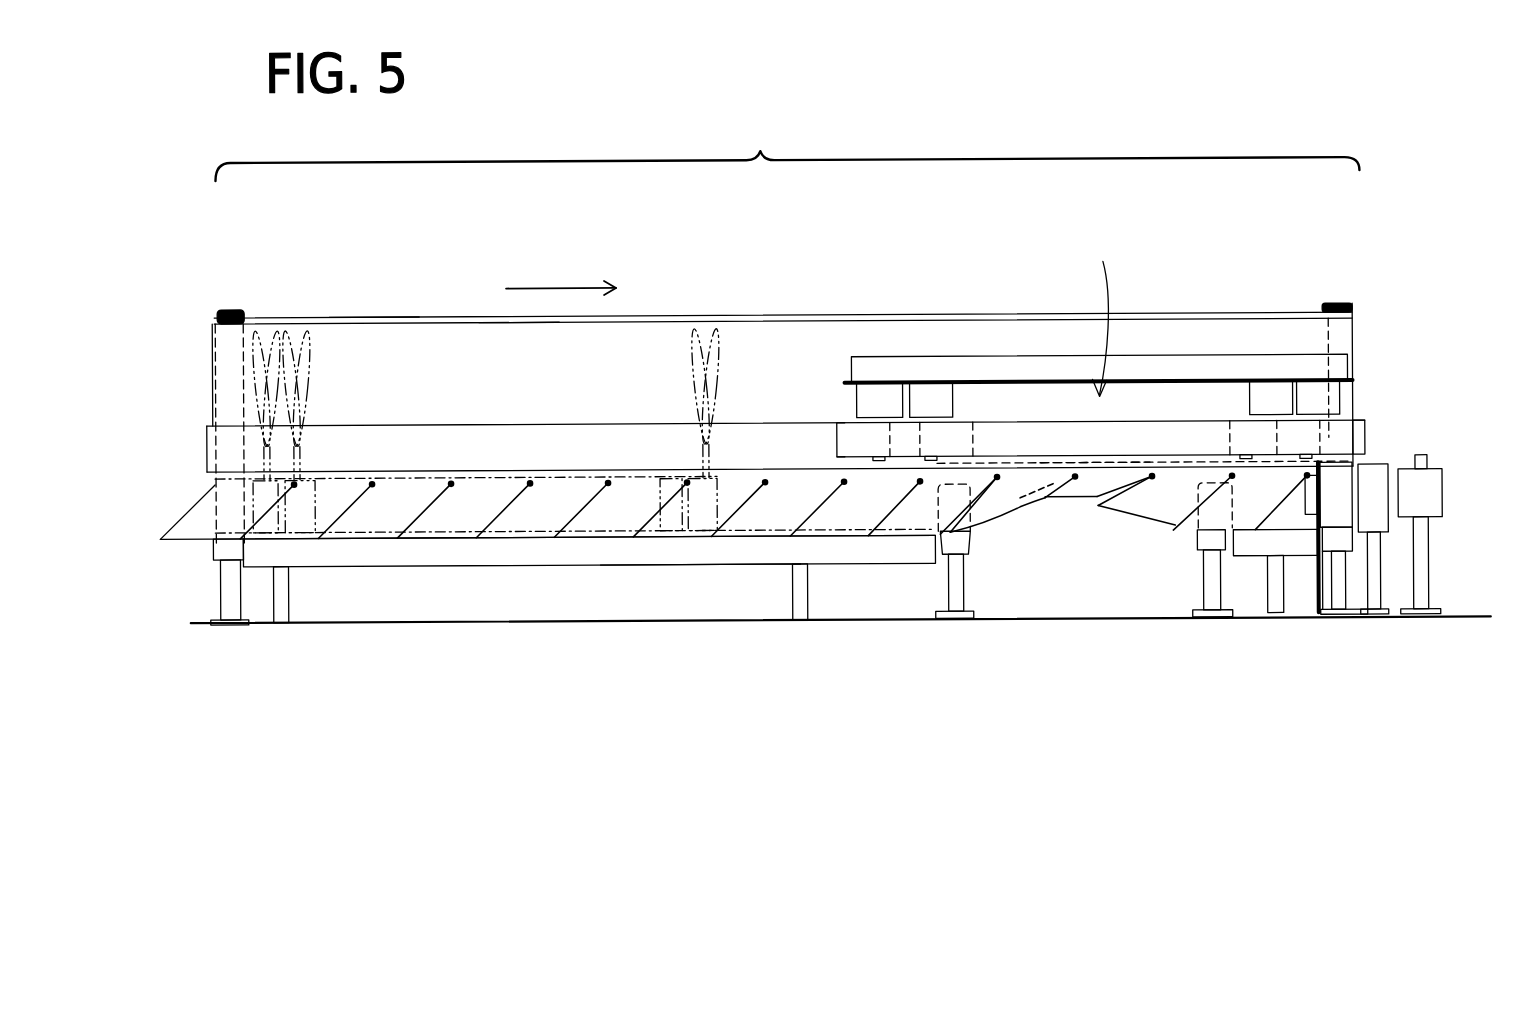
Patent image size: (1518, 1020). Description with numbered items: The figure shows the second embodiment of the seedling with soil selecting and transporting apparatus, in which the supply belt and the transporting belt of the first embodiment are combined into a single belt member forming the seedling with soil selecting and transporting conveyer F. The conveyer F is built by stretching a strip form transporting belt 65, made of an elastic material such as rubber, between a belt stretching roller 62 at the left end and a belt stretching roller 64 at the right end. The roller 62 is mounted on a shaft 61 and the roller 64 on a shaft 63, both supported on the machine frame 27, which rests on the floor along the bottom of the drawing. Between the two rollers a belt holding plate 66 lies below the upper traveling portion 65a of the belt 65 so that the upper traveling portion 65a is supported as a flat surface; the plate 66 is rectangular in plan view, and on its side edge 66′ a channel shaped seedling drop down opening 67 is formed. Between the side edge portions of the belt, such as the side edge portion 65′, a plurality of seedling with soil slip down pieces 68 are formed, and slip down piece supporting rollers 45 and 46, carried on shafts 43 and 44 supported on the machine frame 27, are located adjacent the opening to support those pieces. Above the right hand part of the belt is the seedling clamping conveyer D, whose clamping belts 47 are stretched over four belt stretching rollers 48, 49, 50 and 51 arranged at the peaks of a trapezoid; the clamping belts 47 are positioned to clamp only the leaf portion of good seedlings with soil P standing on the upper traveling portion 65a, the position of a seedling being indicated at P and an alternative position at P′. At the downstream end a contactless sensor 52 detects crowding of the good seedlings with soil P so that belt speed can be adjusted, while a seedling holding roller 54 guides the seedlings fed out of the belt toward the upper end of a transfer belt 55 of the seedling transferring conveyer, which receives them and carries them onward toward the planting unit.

The seedling with soil selecting and transporting conveyer F is at (787, 144).
The belt stretching roller 62 is at (233, 312).
The strip form transporting belt 65 is at (470, 380).
The upper traveling portion 65a is at (505, 352).
The side edge portion 65′ is at (448, 543).
The belt holding plate 66 is at (378, 557).
The side edge of belt holding plate 66′ is at (707, 545).
The shaft 61 is at (228, 600).
The machine frame 27 is at (823, 622).
The good seedlings with soil P is at (713, 500).
The pusher position P′ is at (677, 520).
The seedling with soil slip down pieces 68 is at (190, 530).
The clamping belts 47 is at (1042, 442).
The belt stretching roller 48 is at (947, 438).
The seedling clamping conveyer D is at (1098, 306).
The belt stretching roller 49 is at (1245, 445).
The belt stretching roller 51 is at (845, 438).
The belt stretching roller 50 is at (1320, 440).
The shaft 43 is at (957, 600).
The slip down piece supporting roller 45 is at (950, 540).
The seedling drop down opening 67 is at (1093, 465).
The slip down piece supporting roller 46 is at (1202, 540).
The shaft 44 is at (1215, 582).
The contactless sensor 52 is at (1318, 482).
The belt stretching roller 64 is at (1333, 550).
The shaft 63 is at (1333, 583).
The seedling holding roller 54 is at (1373, 490).
The transfer belt 55 is at (1427, 487).